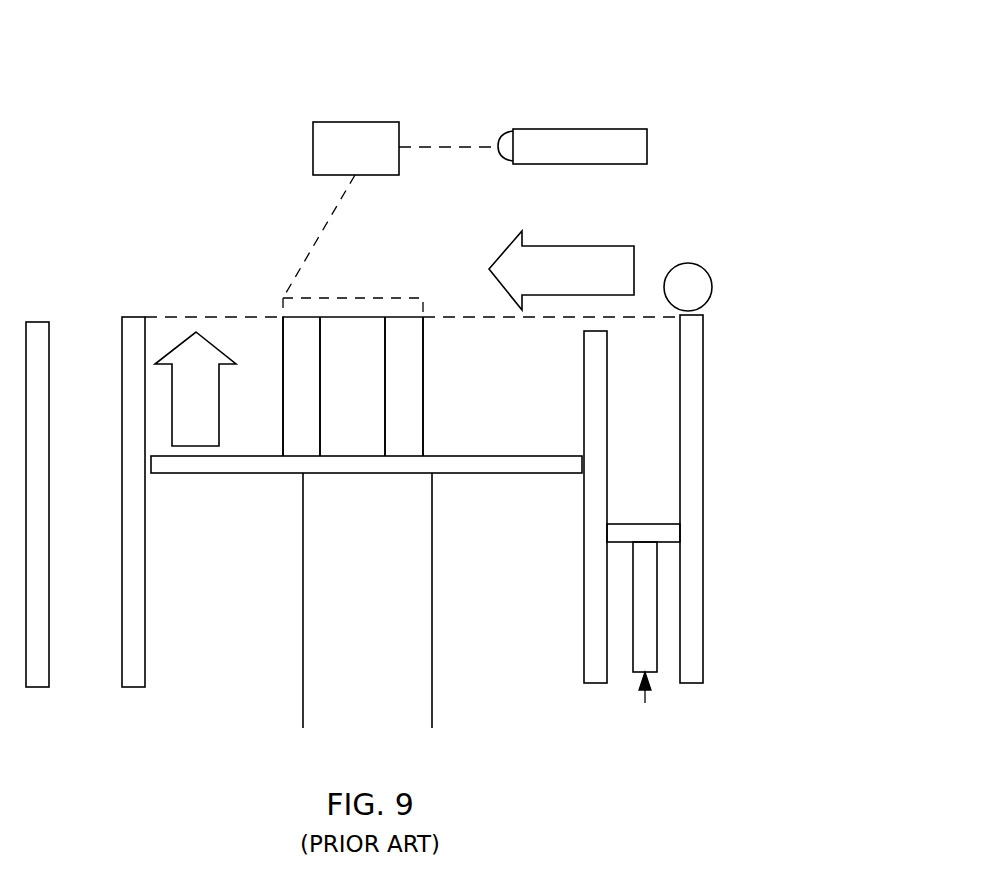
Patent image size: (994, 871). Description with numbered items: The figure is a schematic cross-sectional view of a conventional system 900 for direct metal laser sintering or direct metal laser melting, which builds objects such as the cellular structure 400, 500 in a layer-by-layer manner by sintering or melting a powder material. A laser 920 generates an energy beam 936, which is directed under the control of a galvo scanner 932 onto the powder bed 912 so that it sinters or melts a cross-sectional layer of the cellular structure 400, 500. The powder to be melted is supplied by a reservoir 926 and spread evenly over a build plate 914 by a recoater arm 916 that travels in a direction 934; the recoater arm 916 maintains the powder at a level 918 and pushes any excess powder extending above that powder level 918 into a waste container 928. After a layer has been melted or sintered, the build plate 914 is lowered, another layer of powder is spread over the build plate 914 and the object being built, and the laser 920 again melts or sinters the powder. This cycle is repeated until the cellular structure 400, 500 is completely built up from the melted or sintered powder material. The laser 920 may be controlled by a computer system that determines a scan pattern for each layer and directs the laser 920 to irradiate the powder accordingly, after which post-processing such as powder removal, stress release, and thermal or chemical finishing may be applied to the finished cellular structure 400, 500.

The system 900 is at (140, 78).
The powder bed 912 is at (476, 345).
The build plate 914 is at (512, 452).
The recoater arm 916 is at (690, 263).
The powder level 918 is at (200, 317).
The laser 920 is at (530, 130).
The reservoir 926 is at (657, 391).
The waste container 928 is at (106, 597).
The galvo scanner 932 is at (355, 122).
The direction 934 is at (500, 280).
The energy beam 936 is at (318, 248).
The cellular structure 400 is at (270, 419).
The cellular structure 500 is at (353, 386).